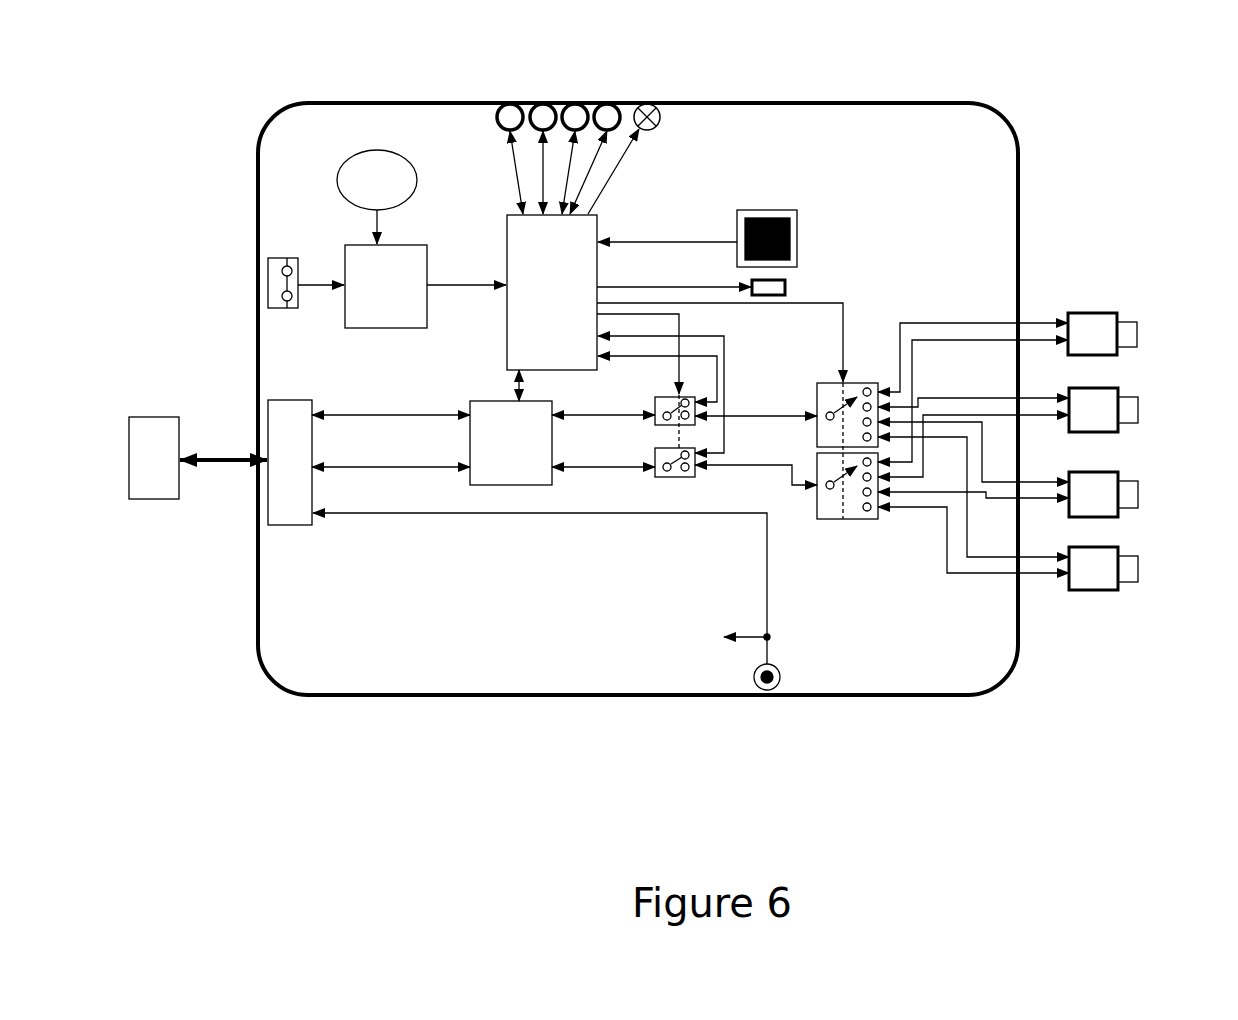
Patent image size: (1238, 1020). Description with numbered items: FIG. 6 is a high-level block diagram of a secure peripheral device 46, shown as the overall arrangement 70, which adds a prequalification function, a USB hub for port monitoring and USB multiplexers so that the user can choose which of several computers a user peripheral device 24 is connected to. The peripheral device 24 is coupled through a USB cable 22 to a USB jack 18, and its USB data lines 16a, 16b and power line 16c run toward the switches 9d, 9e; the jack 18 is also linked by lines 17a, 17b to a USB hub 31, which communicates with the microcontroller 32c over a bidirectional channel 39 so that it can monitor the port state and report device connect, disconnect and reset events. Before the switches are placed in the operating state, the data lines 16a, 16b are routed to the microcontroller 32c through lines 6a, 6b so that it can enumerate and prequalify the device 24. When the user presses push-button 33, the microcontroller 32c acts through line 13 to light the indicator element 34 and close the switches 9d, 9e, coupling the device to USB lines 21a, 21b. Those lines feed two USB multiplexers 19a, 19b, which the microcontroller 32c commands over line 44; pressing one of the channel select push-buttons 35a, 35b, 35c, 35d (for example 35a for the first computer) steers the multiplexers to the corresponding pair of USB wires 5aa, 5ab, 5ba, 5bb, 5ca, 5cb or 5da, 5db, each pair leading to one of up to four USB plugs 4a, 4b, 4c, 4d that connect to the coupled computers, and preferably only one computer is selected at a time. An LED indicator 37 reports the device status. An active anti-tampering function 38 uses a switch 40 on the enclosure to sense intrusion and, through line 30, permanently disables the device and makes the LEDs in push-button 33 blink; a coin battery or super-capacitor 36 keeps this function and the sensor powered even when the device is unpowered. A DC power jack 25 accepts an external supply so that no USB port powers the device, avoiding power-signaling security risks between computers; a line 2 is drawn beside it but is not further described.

The control system 70 is at (190, 72).
The push button 35a is at (504, 104).
The channel select push-button 35b is at (540, 104).
The channel select push-button 35c is at (572, 104).
The channel select push-button 35d is at (606, 104).
The LED indicator 37 is at (647, 104).
The coin battery or super-capacitor 36 is at (417, 180).
The switch 40 is at (287, 258).
The active anti-tampering function 38 is at (343, 328).
The line 30 is at (465, 285).
The microcontroller 32c is at (507, 326).
The push-button 33 is at (797, 240).
The indicator element 34 is at (785, 287).
The line 44 is at (652, 303).
The line 13 is at (679, 314).
The line 6a is at (718, 357).
The line 6b is at (726, 336).
The switch 9d is at (655, 401).
The switch 9e is at (655, 453).
The USB data line 16a is at (570, 415).
The USB data line 16b is at (588, 467).
The line 16c is at (388, 513).
The data line 17a is at (388, 415).
The data line 17b is at (398, 467).
The bidirectional channel 39 is at (525, 388).
The USB hub 31 is at (470, 400).
The USB jack 18 is at (290, 525).
The USB cable 22 is at (220, 465).
The user peripheral device 24 is at (150, 499).
The output 2 is at (738, 637).
The DC power jack 25 is at (758, 695).
The USB multiplexer 19a is at (817, 437).
The USB multiplexer 19b is at (845, 519).
The USB line 21a is at (797, 416).
The USB line 21b is at (792, 490).
The USB wire 5aa is at (906, 323).
The USB wire 5ab is at (952, 340).
The USB wire 5ba is at (933, 398).
The USB wire 5bb is at (978, 415).
The USB wire 5ca is at (997, 498).
The USB wire 5cb is at (1038, 458).
The USB wire 5da is at (995, 573).
The USB wire 5db is at (1037, 557).
The USB plug 4a is at (1137, 335).
The USB plug 4b is at (1138, 410).
The USB plug 4c is at (1138, 494).
The USB plug 4d is at (1138, 569).
The device 46 is at (425, 695).